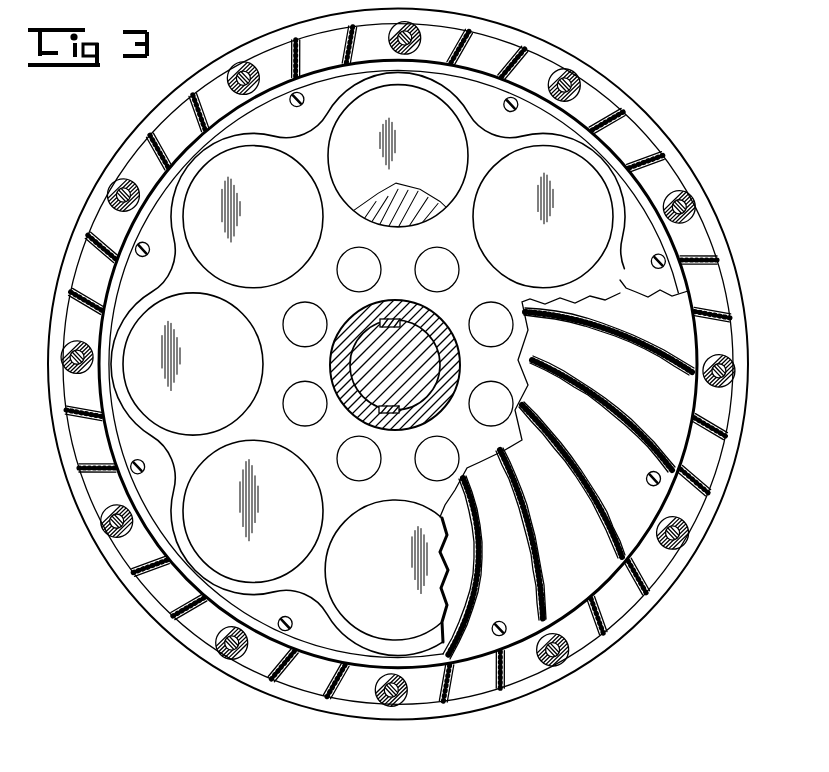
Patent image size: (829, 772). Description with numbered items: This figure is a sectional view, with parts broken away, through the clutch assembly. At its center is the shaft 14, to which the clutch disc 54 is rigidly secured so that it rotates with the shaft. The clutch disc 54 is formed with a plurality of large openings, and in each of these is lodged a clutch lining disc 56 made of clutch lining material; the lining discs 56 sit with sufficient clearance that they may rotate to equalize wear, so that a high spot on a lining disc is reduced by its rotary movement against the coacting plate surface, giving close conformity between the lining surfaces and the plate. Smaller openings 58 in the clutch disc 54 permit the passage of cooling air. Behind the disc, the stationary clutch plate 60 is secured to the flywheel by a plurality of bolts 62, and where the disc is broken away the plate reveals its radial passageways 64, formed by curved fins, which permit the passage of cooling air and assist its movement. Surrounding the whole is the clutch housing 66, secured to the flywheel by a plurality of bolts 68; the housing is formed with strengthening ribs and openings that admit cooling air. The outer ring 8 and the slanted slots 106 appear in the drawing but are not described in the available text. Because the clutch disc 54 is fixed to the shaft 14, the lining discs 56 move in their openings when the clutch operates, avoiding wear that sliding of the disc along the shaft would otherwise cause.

The outer ring 8 is at (120, 147).
The shaft 14 is at (435, 375).
The clutch disc 54 is at (608, 192).
The clutch lining discs 56 is at (292, 250).
The openings 58 is at (430, 261).
The clutch plate 60 is at (553, 70).
The bolts 62 is at (507, 115).
The radial passageways 64 is at (600, 347).
The clutch housing 66 is at (238, 66).
The bolts 68 is at (692, 203).
The slanted slots 106 is at (85, 263).